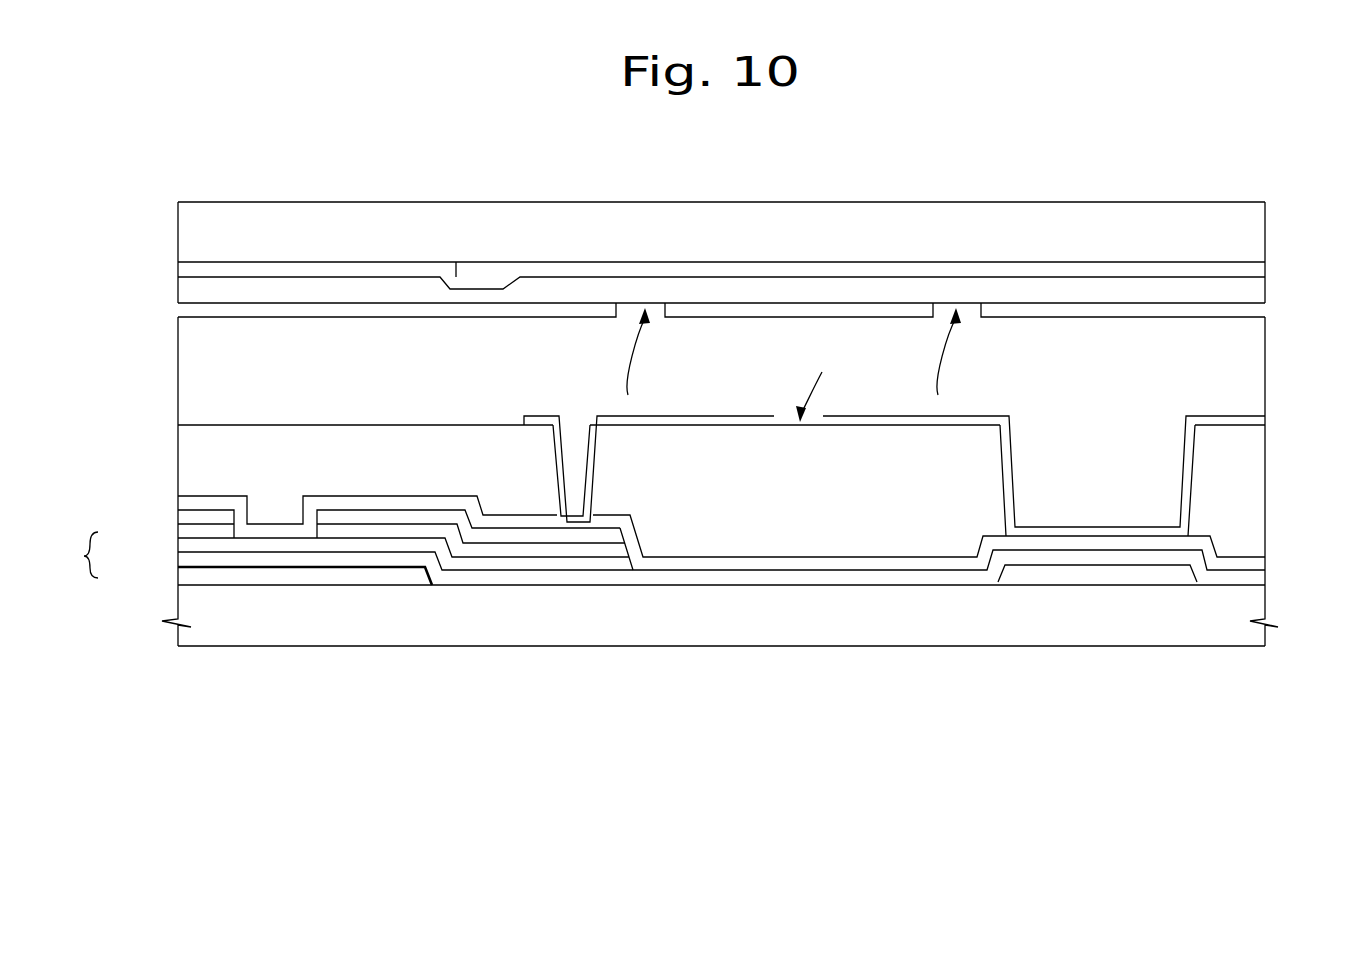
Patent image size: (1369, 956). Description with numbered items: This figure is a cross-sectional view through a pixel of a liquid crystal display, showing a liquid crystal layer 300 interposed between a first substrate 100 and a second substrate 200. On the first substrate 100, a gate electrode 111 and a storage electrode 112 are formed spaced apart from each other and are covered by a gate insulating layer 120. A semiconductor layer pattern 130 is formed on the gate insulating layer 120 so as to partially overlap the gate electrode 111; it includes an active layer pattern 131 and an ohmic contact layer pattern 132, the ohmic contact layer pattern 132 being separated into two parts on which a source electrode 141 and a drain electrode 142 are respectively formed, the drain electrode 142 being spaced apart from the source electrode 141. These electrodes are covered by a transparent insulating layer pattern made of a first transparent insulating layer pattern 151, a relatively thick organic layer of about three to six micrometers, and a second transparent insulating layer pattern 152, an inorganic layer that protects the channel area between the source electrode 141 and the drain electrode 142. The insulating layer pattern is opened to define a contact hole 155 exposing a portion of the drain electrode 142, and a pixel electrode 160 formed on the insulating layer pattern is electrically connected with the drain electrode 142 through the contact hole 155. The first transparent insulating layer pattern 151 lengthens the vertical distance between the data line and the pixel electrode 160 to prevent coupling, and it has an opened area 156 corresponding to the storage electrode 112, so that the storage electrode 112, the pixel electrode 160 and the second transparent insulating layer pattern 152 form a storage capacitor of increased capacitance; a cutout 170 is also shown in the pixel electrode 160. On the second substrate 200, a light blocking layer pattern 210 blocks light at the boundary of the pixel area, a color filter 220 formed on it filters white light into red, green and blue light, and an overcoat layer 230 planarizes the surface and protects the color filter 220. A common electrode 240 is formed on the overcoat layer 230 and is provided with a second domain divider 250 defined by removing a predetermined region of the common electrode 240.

The first substrate 100 is at (1255, 605).
The gate electrode 111 is at (280, 577).
The storage electrode 112 is at (1105, 578).
The gate insulating layer 120 is at (1255, 569).
The semiconductor layer pattern 130 is at (342, 608).
The active layer pattern 131 is at (183, 545).
The ohmic contact layer pattern 132 is at (183, 529).
The source electrode 141 is at (183, 516).
The drain electrode 142 is at (500, 535).
The first transparent insulating layer pattern 151 is at (190, 452).
The second transparent insulating layer pattern 152 is at (182, 502).
The contact hole 155 is at (557, 468).
The opened area 156 is at (1011, 478).
The pixel electrode 160 is at (1253, 418).
The cutout of pixel electrode 170 is at (819, 382).
The second substrate 200 is at (1255, 228).
The light blocking layer pattern 210 is at (178, 270).
The color filter 220 is at (1255, 266).
The overcoat layer 230 is at (1255, 292).
The common electrode 240 is at (1255, 310).
The second domain divider 250 is at (783, 351).
The liquid crystal layer 300 is at (1255, 372).